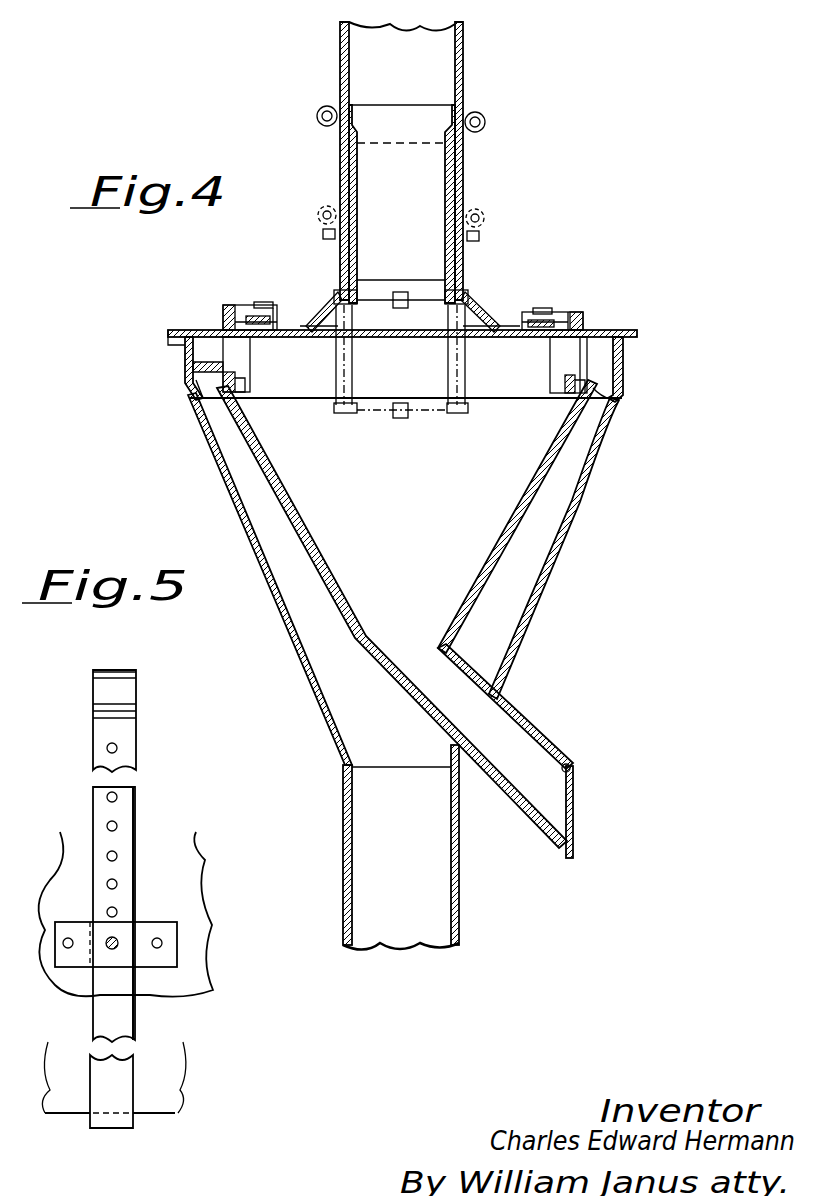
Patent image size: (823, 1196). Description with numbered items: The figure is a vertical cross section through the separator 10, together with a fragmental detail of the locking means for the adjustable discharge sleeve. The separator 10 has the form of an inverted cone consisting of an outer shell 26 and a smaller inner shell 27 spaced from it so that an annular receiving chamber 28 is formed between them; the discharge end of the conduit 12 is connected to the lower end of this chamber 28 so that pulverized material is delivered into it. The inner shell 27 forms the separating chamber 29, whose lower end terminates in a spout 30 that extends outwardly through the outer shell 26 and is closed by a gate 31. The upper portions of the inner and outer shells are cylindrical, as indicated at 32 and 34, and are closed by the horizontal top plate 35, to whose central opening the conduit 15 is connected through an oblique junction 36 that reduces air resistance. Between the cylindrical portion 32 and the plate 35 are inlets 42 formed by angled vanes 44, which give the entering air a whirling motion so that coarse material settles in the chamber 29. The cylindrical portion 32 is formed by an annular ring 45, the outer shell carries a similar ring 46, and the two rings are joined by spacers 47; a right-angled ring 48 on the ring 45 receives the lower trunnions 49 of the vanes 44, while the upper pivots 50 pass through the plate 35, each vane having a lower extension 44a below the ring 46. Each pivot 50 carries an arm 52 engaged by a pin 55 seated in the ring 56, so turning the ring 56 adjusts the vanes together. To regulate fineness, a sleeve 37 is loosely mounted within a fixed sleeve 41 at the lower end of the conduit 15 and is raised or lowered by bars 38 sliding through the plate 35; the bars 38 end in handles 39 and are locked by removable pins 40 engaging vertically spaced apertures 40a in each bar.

In FIG. 4, the separator 10 is at (200, 433).
In FIG. 4, the conduit 12 is at (383, 888).
In FIG. 4, the conduit 15 is at (440, 62).
In FIG. 5, the conduit 15 is at (195, 870).
In FIG. 4, the outer shell 26 is at (590, 488).
In FIG. 4, the inner shell 27 is at (323, 556).
In FIG. 4, the annular receiving chamber 28 is at (205, 350).
In FIG. 4, the separating chamber 29 is at (517, 516).
In FIG. 4, the spout 30 is at (553, 745).
In FIG. 4, the gate 31 is at (576, 820).
In FIG. 4, the cylindrical portion 32 is at (595, 358).
In FIG. 4, the cylindrical portion 34 is at (625, 382).
In FIG. 4, the plate 35 is at (613, 345).
In FIG. 4, the oblique junction 36 is at (487, 312).
In FIG. 4, the sleeve 37 is at (452, 170).
In FIG. 5, the sleeve 37 is at (65, 1112).
In FIG. 4, the bars 38 is at (349, 170).
In FIG. 5, the bars 38 is at (126, 805).
In FIG. 4, the handles 39 is at (317, 113).
In FIG. 5, the handles 39 is at (110, 688).
In FIG. 4, the removable pins 40 is at (325, 233).
In FIG. 5, the removable pins 40 is at (112, 948).
In FIG. 5, the apertures 40a is at (107, 856).
In FIG. 4, the fixed sleeve 41 is at (401, 239).
In FIG. 4, the inlets 42 is at (188, 338).
In FIG. 4, the vanes 44 is at (250, 373).
In FIG. 4, the extension 44a is at (252, 398).
In FIG. 4, the annular ring 45 is at (200, 415).
In FIG. 4, the ring 46 is at (195, 402).
In FIG. 4, the spacers 47 is at (615, 405).
In FIG. 4, the ring 48 is at (193, 366).
In FIG. 4, the trunnions 49 is at (248, 384).
In FIG. 4, the pivots 50 is at (225, 346).
In FIG. 4, the arm 52 is at (235, 312).
In FIG. 4, the pin 55 is at (262, 300).
In FIG. 4, the ring 56 is at (277, 322).